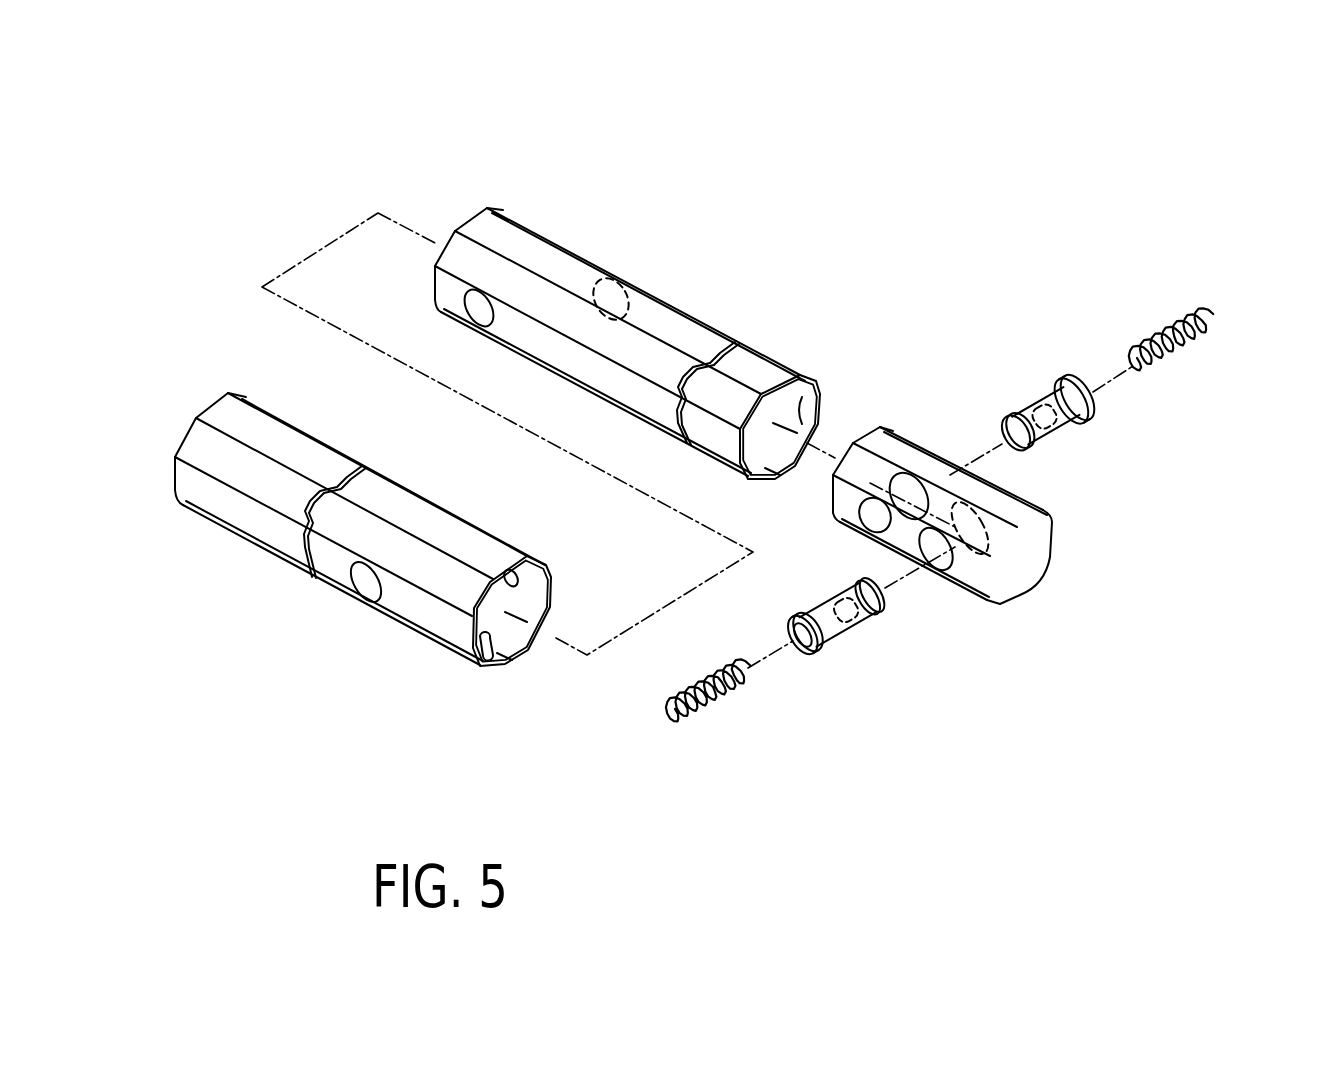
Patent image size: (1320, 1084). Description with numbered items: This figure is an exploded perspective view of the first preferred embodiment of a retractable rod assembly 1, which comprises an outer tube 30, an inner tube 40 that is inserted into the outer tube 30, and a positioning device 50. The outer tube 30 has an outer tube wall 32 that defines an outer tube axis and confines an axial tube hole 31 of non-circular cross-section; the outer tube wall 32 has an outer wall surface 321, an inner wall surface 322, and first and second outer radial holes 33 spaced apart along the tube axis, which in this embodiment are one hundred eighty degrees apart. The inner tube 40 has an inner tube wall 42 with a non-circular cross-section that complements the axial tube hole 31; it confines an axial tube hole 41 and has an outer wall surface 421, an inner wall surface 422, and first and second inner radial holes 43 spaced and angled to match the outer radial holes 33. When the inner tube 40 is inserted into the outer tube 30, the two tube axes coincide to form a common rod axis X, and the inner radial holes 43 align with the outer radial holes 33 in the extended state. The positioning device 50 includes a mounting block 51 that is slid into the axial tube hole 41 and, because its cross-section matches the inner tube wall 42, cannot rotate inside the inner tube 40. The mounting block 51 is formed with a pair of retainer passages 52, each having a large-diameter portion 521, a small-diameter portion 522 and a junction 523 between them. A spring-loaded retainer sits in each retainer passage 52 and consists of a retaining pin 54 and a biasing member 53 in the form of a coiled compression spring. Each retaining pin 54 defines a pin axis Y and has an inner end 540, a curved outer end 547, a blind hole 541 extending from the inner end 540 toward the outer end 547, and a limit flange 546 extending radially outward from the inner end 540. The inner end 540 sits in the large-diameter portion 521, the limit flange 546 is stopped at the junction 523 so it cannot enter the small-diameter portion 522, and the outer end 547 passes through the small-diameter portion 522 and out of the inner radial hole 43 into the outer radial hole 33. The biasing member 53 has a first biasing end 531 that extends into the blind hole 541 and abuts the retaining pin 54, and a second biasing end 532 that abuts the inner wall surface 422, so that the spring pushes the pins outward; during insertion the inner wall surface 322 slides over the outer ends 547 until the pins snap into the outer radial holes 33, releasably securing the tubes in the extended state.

The retractable rod assembly 1 is at (598, 683).
The outer tube 30 is at (385, 636).
The axial tube hole 31 is at (497, 655).
The outer tube wall 32 is at (548, 590).
The outer wall surface 321 is at (435, 625).
The inner wall surface 322 is at (495, 652).
The first and second outer radial holes 33 is at (363, 588).
The inner tube 40 is at (665, 287).
The axial tube hole 41 is at (777, 400).
The inner tube wall 42 is at (744, 474).
The outer wall surface 421 is at (745, 367).
The inner wall surface 422 is at (813, 403).
The first and second inner radial holes 43 is at (476, 306).
The positioning device 50 is at (1036, 595).
The mounting block 51 is at (1010, 587).
The retainer passages 52 is at (837, 497).
The large-diameter portion 521 is at (1000, 563).
The small-diameter portion 522 is at (1020, 493).
The junction 523 is at (1020, 537).
The biasing member 53 is at (707, 707).
The first biasing end 531 is at (746, 665).
The second biasing end 532 is at (677, 720).
The retaining pin 54 is at (793, 627).
The inner end 540 is at (792, 613).
The blind hole 541 is at (830, 598).
The limit flange 546 is at (828, 652).
The curved outer end 547 is at (888, 593).
The common rod axis X is at (407, 227).
The pin axis Y is at (1107, 375).